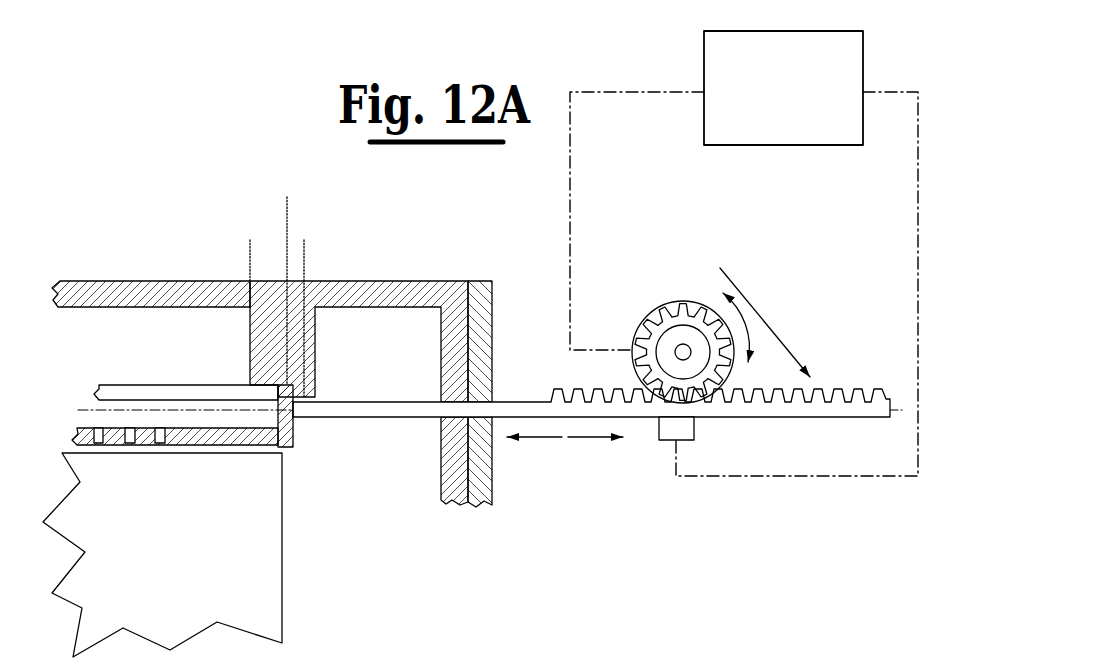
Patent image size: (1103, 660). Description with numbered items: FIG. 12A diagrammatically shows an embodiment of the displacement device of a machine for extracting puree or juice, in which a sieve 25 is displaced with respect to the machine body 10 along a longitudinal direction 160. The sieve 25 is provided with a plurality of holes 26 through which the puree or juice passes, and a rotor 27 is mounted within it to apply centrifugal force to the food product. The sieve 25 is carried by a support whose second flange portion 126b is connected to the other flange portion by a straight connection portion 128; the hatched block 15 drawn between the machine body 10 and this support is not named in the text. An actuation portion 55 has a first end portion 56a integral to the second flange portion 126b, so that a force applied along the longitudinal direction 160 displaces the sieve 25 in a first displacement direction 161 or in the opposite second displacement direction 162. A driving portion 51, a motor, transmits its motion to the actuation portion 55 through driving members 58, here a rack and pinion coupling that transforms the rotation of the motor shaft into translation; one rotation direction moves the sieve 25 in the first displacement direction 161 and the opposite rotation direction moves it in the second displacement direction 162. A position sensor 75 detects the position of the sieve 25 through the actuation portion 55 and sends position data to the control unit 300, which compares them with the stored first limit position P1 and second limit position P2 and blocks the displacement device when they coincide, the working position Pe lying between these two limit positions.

The machine body 10 is at (180, 282).
The holder block 15 is at (310, 355).
The sieve 25 is at (142, 439).
The holes 26 is at (159, 446).
The rotor 27 is at (264, 538).
The driving portion 51 is at (715, 318).
The actuation portion 55 is at (591, 391).
The first end portion 56a is at (298, 413).
The driving members 58 is at (692, 303).
The position sensor 75 is at (665, 445).
The second flange portion 126b is at (290, 437).
The straight connection portion 128 is at (137, 396).
The longitudinal direction 160 is at (88, 408).
The first displacement direction 161 is at (539, 439).
The second displacement direction 162 is at (597, 439).
The control unit 300 is at (693, 57).
The first limit position P1 is at (252, 248).
The second limit position P2 is at (310, 306).
The working position Pe is at (292, 278).